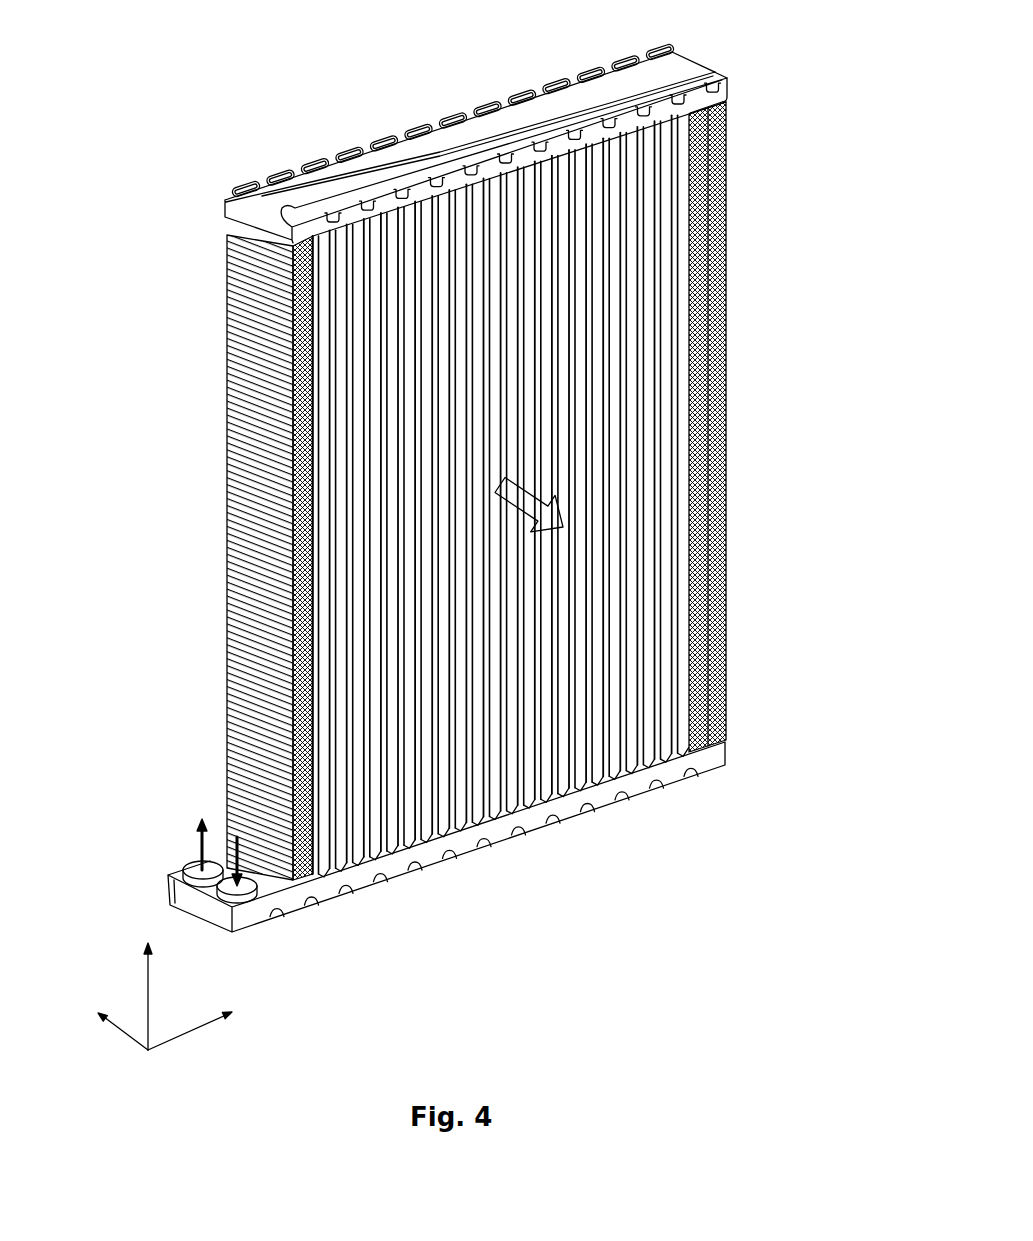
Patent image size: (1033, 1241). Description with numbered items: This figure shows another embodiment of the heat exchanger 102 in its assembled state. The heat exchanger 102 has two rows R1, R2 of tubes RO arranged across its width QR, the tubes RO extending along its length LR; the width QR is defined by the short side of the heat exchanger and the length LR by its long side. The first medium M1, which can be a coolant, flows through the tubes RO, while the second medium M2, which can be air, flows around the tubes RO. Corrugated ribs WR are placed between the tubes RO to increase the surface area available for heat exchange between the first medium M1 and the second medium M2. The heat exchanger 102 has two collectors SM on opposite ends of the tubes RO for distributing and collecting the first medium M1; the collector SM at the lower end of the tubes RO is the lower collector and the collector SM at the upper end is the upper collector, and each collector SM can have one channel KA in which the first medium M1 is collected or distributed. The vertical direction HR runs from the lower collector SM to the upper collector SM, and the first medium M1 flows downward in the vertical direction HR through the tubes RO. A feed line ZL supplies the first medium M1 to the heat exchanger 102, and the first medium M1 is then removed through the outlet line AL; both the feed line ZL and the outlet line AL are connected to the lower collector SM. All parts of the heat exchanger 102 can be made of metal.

The heat exchanger 102 is at (152, 148).
The collector SM is at (521, 117).
The channel KA is at (690, 80).
The first row of tubes R1 is at (728, 381).
The second row of tubes R2 is at (704, 436).
The second medium M2 is at (562, 526).
The corrugated ribs WR is at (257, 447).
The tubes RO is at (330, 572).
The first medium M1 is at (198, 843).
The outlet line AL is at (185, 867).
The feed line ZL is at (252, 893).
The vertical direction HR is at (169, 996).
The width QR is at (116, 1020).
The length LR is at (197, 1021).